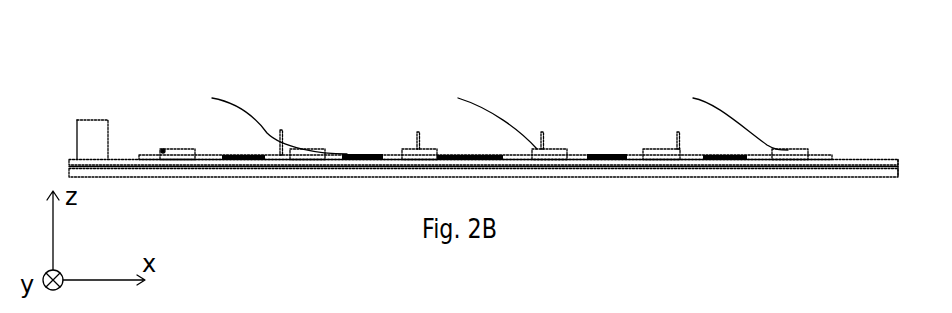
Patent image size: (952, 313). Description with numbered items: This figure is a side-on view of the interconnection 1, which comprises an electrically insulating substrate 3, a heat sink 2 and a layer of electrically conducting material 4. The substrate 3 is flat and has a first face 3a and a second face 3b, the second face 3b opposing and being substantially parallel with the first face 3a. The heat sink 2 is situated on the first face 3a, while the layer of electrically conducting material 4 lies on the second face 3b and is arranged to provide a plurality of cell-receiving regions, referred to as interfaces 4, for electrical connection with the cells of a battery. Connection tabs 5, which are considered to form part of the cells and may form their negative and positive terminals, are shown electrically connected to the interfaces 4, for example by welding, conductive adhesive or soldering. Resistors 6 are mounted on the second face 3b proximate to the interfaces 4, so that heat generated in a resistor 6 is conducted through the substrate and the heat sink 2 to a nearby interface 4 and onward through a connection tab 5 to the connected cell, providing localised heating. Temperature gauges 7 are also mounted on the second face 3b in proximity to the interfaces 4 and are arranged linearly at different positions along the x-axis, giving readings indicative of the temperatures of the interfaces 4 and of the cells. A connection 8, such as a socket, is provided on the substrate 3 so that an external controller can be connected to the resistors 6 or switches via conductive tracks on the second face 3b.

The interconnection 1 is at (216, 62).
The heat sink 2 is at (766, 170).
The electrically insulating substrate 3 is at (897, 162).
The first face 3a is at (850, 161).
The second face 3b is at (862, 166).
The layer of electrically conducting material 4 is at (473, 156).
The connection tab 5 is at (281, 130).
The resistor 6 is at (228, 155).
The temperature gauge 7 is at (163, 151).
The connection 8 is at (85, 122).